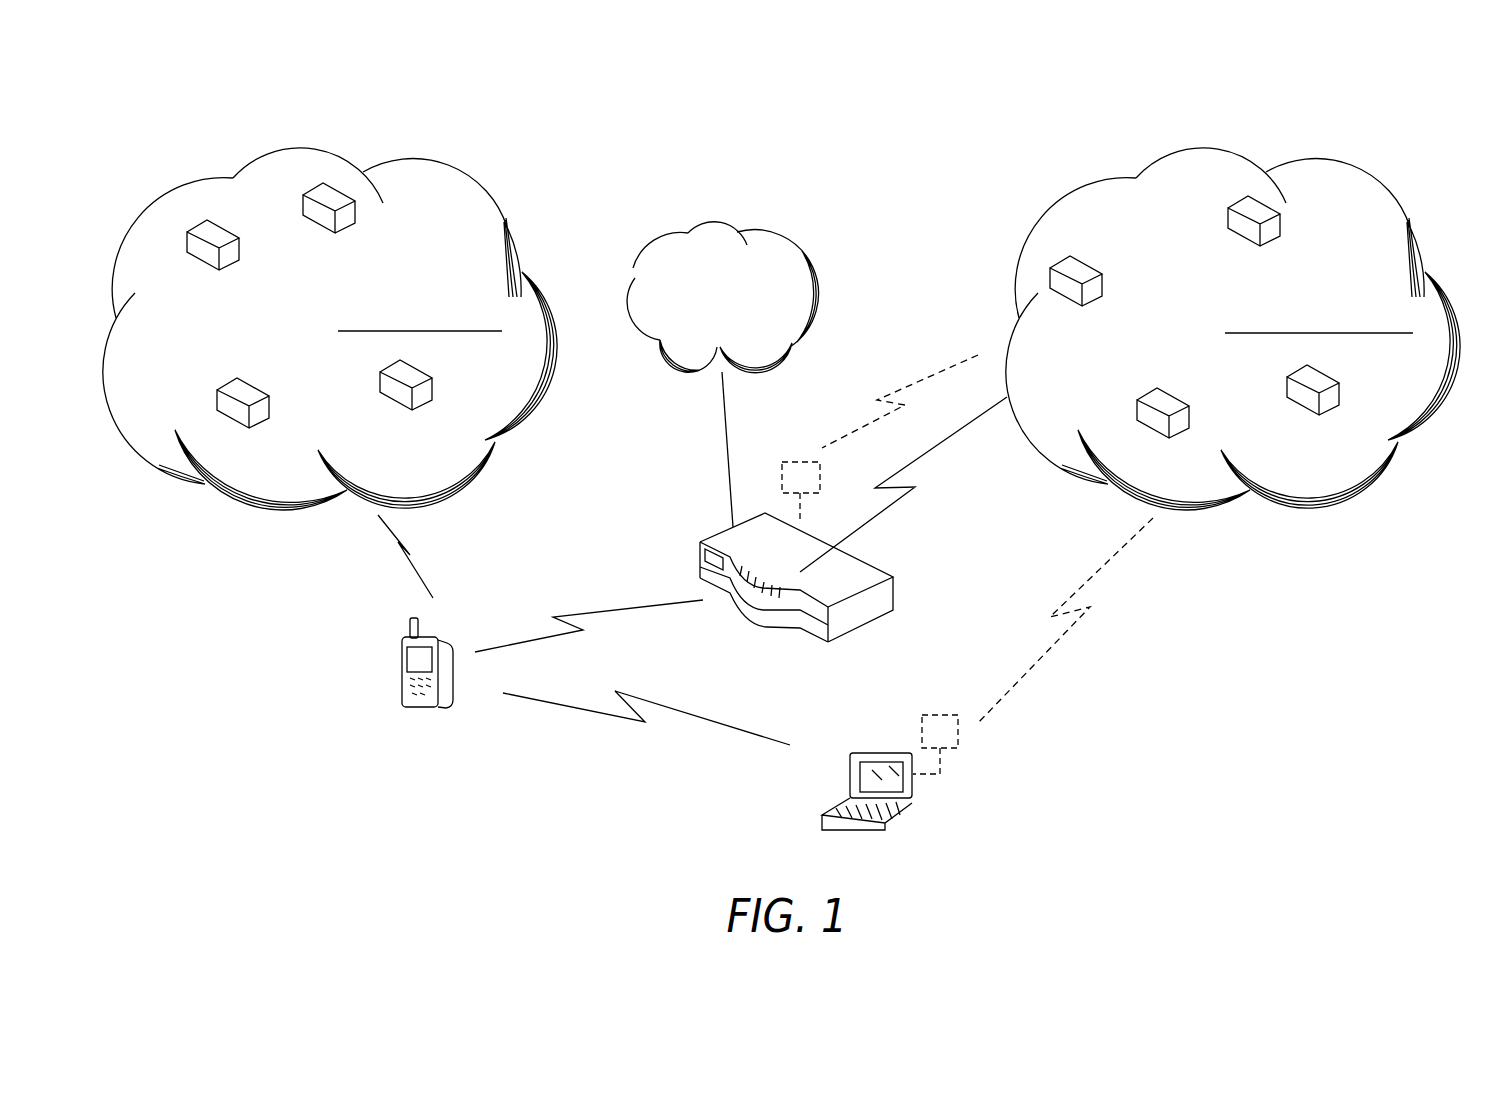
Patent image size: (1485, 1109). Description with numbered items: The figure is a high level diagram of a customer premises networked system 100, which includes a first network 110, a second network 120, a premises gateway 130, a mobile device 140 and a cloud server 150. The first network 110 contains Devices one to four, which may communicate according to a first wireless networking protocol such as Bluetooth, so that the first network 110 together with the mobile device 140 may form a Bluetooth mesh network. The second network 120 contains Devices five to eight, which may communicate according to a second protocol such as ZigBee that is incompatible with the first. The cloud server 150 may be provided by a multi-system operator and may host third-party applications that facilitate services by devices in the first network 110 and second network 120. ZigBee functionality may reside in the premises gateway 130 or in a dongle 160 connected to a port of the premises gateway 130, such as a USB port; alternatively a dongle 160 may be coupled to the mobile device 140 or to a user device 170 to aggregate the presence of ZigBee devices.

The customer premises networked system 100 is at (138, 134).
The first network 110 is at (437, 162).
The second network 120 is at (1295, 160).
The premises gateway 130 is at (865, 562).
The mobile device 140 is at (402, 663).
The cloud server 150 is at (748, 223).
The dongle 160 is at (822, 466).
The user device 170 is at (863, 752).